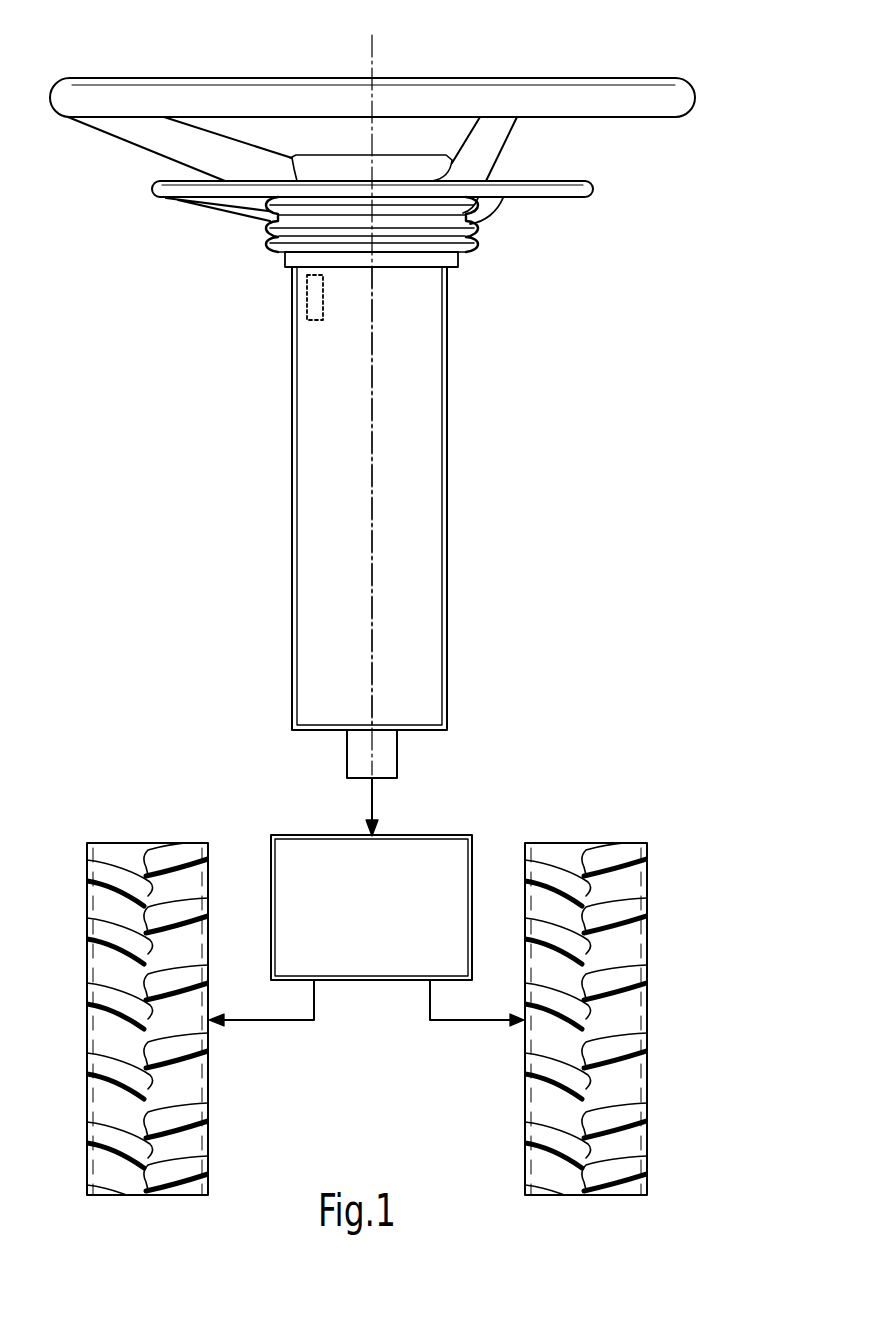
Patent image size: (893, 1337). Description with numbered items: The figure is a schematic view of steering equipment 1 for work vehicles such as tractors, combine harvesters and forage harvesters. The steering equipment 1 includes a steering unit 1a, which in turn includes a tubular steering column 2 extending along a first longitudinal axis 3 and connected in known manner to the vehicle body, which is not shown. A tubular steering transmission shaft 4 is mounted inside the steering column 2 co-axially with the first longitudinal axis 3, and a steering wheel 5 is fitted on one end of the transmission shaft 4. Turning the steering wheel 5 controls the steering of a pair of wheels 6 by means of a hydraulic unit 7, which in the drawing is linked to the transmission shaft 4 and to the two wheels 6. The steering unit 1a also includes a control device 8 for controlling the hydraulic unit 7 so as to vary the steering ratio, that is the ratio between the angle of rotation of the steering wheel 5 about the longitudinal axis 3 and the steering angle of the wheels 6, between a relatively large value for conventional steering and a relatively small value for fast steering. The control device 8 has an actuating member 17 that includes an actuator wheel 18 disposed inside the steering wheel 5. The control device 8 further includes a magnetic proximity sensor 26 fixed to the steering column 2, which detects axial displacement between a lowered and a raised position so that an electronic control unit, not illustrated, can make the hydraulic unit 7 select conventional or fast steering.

The steering equipment 1 is at (720, 158).
The steering unit 1a is at (632, 284).
The steering column 2 is at (312, 487).
The first longitudinal axis 3 is at (373, 60).
The steering transmission shaft 4 is at (355, 750).
The steering wheel 5 is at (157, 90).
The wheels 6 is at (107, 1190).
The hydraulic unit 7 is at (431, 847).
The control device 8 is at (204, 258).
The actuating member 17 is at (171, 218).
The actuator wheel 18 is at (152, 191).
The magnetic proximity sensor 26 is at (305, 303).